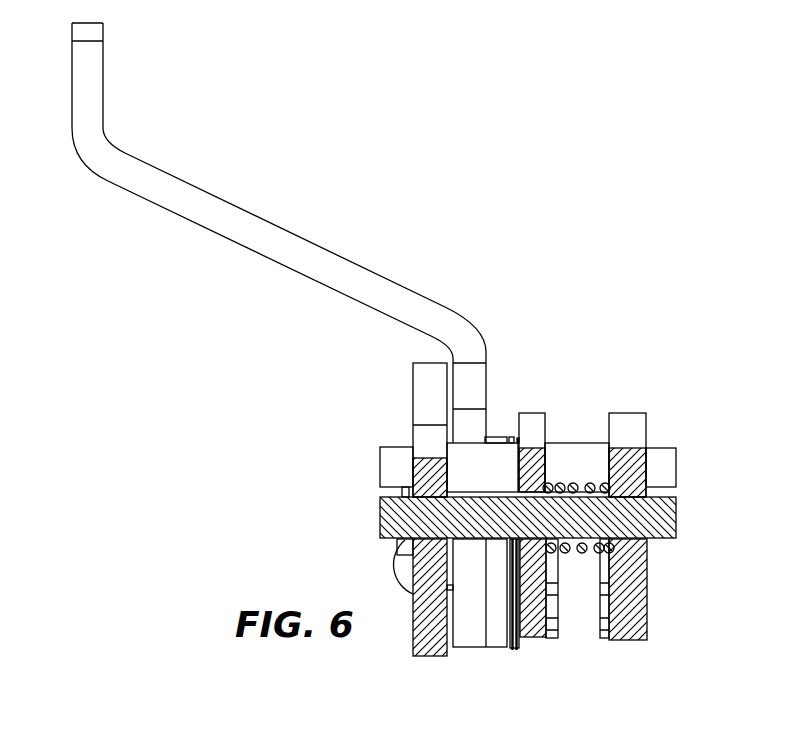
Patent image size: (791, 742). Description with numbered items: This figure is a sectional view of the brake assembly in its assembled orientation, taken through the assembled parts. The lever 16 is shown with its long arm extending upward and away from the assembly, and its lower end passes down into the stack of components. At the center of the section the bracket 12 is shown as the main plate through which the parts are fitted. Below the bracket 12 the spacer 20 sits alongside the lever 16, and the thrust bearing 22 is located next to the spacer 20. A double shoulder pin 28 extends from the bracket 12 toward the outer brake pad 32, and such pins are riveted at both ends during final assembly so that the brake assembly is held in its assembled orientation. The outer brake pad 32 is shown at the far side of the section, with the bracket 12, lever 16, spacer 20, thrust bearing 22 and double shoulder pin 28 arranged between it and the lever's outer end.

The lever 16 is at (286, 243).
The bracket 12 is at (423, 643).
The spacer 20 is at (495, 637).
The thrust bearing 22 is at (512, 640).
The double shoulder pin 28 is at (407, 577).
The outer brake pad 32 is at (638, 598).